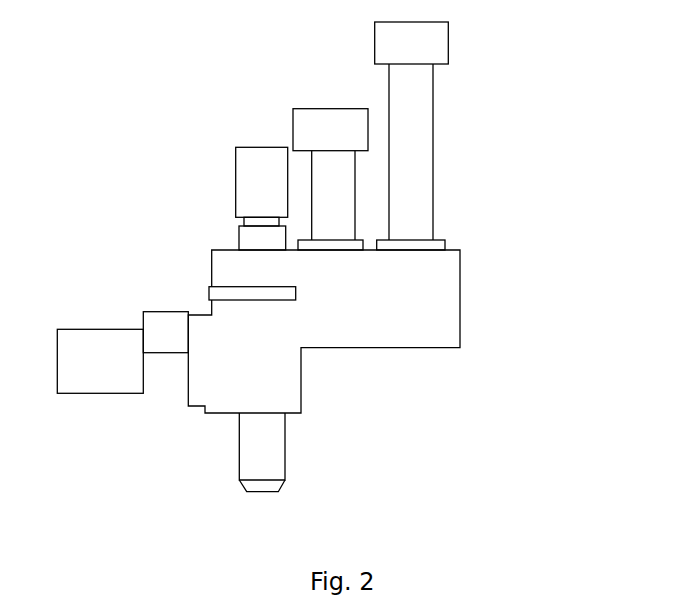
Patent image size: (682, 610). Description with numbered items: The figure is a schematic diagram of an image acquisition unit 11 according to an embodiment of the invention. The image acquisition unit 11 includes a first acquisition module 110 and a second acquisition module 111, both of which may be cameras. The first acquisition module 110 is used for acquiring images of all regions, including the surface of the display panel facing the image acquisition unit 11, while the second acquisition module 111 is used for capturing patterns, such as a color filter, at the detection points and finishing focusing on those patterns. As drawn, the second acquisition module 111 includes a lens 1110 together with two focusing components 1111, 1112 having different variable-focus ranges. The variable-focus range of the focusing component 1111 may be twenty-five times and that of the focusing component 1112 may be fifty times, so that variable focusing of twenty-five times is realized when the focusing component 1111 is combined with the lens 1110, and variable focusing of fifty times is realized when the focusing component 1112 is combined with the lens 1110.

The image acquisition unit 11 is at (82, 196).
The first acquisition module 110 is at (262, 172).
The second acquisition module 111 is at (593, 138).
The lens 1110 is at (264, 460).
The focusing component 1111 is at (341, 196).
The focusing component 1112 is at (417, 136).